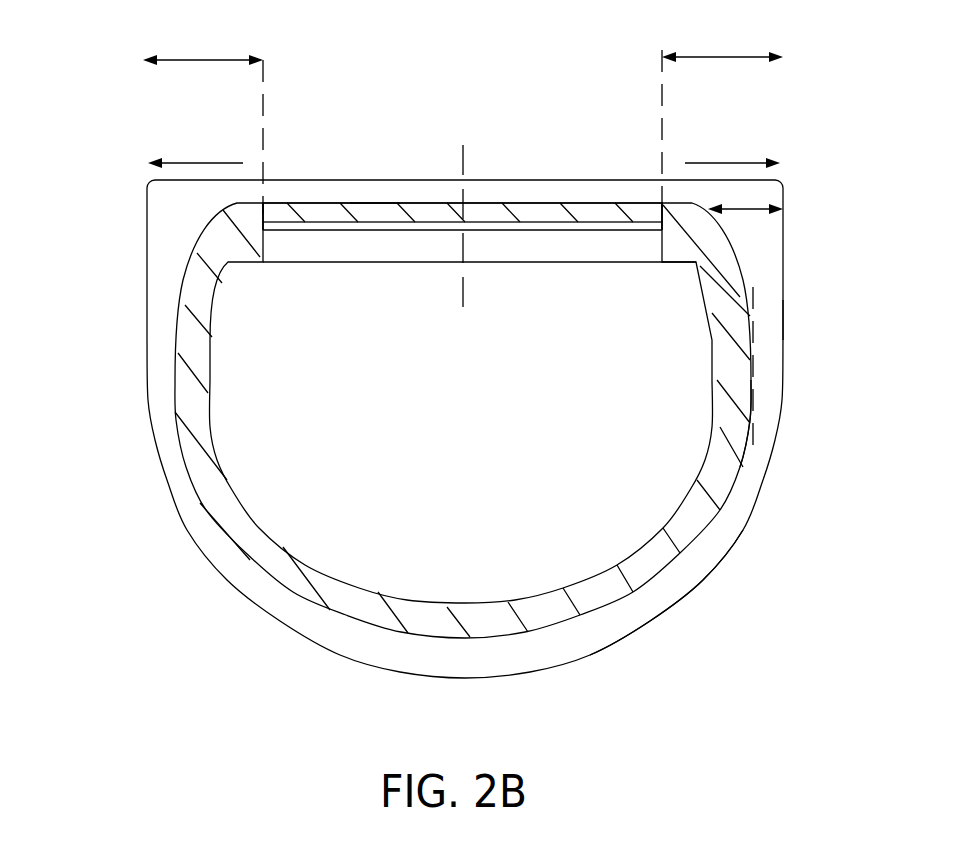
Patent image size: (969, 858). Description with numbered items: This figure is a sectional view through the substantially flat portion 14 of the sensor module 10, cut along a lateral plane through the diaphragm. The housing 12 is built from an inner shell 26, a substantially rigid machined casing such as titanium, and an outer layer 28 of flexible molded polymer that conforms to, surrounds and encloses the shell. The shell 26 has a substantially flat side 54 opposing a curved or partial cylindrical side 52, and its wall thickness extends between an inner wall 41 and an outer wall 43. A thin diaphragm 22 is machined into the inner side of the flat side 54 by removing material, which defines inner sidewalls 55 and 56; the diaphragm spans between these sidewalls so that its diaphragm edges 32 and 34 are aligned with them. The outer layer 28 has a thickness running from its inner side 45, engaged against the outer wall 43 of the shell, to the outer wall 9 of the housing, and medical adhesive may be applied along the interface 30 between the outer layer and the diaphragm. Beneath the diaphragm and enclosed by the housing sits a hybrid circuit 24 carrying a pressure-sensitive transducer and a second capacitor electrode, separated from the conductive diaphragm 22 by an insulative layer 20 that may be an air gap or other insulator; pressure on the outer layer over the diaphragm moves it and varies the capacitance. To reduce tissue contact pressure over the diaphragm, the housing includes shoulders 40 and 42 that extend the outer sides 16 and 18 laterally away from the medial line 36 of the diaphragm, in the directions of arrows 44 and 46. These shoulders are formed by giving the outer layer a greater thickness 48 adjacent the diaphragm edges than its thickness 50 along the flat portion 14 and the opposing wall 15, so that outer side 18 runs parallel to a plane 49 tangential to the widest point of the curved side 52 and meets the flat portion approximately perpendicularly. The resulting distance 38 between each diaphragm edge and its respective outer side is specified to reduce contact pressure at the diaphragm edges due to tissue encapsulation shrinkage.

The outer wall of the housing 9 is at (783, 320).
The sensor module 10 is at (497, 33).
The housing 12 is at (454, 418).
The substantially flat portion 14 is at (410, 178).
The opposing wall 15 is at (450, 677).
The outer side 16 is at (145, 268).
The outer side 18 is at (787, 190).
The insulative layer 20 is at (380, 228).
The diaphragm 22 is at (525, 208).
The hybrid circuit 24 is at (542, 262).
The inner shell 26 is at (463, 378).
The outer layer 28 is at (650, 623).
The interface 30 is at (377, 200).
The diaphragm edge 32 is at (265, 207).
The diaphragm edge 34 is at (662, 206).
The medial line 36 is at (460, 298).
The distance 38 is at (202, 60).
The shoulder 40 is at (160, 197).
The inner wall of shell 41 is at (713, 337).
The shoulder 42 is at (756, 192).
The outer wall of shell 43 is at (747, 442).
The arrow 44 is at (221, 163).
The inner side of outer layer 45 is at (820, 515).
The arrow 46 is at (700, 162).
The thickness 48 is at (752, 215).
The plane 49 is at (753, 340).
The outer layer thickness 50 is at (657, 490).
The curved side 52 is at (777, 590).
The substantially flat side 54 is at (685, 262).
The inner sidewall 55 is at (263, 224).
The inner sidewall 56 is at (645, 230).